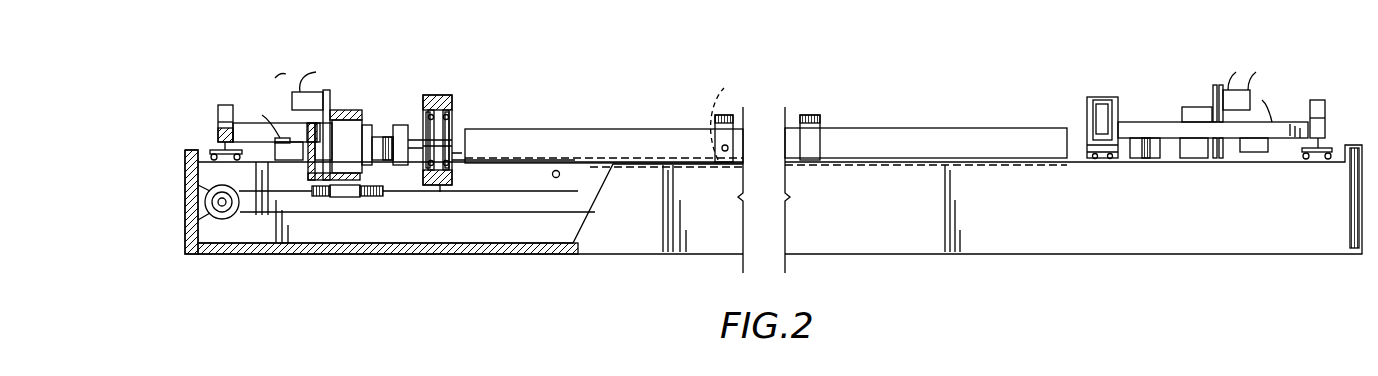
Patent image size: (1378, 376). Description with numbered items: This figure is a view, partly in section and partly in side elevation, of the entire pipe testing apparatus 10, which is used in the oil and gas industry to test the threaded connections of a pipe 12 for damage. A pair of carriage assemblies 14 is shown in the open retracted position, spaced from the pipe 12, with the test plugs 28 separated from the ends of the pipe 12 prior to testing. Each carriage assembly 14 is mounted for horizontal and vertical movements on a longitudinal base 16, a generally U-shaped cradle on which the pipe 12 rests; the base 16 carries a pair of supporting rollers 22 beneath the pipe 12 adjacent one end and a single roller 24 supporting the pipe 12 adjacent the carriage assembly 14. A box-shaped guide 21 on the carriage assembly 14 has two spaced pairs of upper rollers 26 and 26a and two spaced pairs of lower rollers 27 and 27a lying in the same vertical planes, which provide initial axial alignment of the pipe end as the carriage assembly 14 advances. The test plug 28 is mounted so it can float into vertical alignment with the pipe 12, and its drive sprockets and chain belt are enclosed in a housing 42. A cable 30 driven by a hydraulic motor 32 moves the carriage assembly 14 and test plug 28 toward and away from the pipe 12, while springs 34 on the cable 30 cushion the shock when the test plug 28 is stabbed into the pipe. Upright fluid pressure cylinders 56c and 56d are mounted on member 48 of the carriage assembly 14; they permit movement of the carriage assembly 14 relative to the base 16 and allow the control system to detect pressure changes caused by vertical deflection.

The pipe testing apparatus 10 is at (688, 75).
The pipe 12 is at (622, 128).
The carriage assembly 14 is at (350, 106).
The longitudinal base 16 is at (626, 258).
The box-shaped guide 21 is at (450, 102).
The supporting rollers 22 is at (765, 113).
The single roller 24 is at (556, 178).
The upper rollers 26 is at (437, 100).
The upper rollers 26a is at (453, 122).
The lower rollers 27 is at (426, 166).
The lower rollers 27a is at (450, 166).
The test plug 28 is at (388, 140).
The cable 30 is at (440, 194).
The hydraulic motor 32 is at (225, 214).
The springs 34 is at (368, 197).
The housing 42 is at (330, 92).
The member 48 is at (245, 128).
The fluid pressure cylinder 56c is at (225, 112).
The fluid pressure cylinder 56d is at (1101, 112).